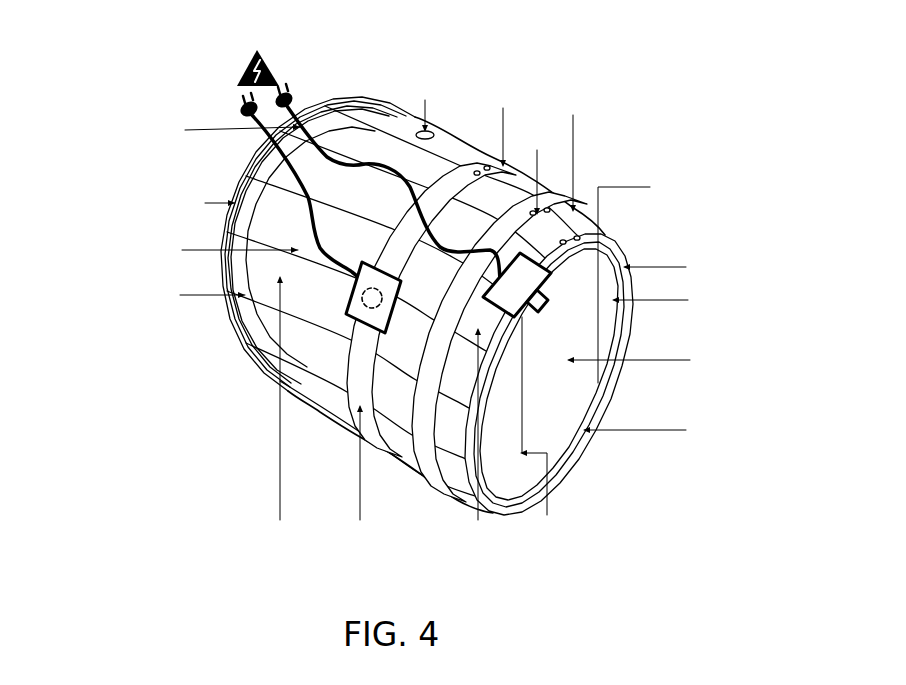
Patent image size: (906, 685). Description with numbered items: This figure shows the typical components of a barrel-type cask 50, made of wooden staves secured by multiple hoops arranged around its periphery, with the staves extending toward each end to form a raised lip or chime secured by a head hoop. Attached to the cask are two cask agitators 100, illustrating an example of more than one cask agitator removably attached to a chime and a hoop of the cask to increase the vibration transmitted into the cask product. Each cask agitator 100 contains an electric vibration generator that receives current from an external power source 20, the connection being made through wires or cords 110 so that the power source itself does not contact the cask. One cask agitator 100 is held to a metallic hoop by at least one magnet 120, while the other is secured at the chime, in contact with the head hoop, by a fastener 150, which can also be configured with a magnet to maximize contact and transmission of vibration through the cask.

The power source 20 is at (238, 74).
The cask 50 is at (240, 339).
The cask agitator 100 is at (538, 277).
The wires or cords 110 is at (337, 163).
The magnet 120 is at (365, 286).
The fastener 150 is at (542, 306).